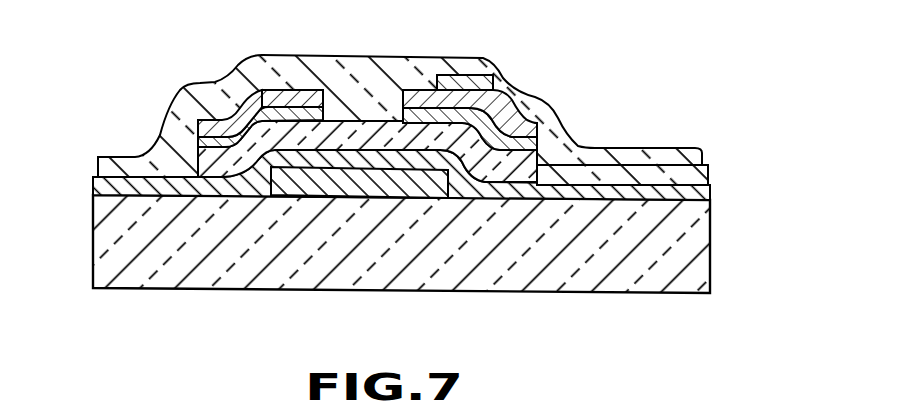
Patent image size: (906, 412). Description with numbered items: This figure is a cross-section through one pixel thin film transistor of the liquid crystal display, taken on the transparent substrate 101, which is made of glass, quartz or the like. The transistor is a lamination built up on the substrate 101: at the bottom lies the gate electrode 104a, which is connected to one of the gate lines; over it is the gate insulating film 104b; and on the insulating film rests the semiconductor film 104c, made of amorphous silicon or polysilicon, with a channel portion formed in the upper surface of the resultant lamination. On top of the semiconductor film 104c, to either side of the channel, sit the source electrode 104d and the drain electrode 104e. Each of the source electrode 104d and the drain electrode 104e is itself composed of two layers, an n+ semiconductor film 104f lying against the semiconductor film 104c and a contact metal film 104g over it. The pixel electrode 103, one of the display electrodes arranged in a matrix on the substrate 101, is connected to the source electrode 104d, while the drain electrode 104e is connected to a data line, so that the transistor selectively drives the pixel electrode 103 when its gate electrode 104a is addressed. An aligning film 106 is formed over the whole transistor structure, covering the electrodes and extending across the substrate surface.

The transparent substrate 101 is at (705, 260).
The pixel electrode 103 is at (708, 173).
The gate electrode 104a is at (313, 189).
The gate insulating film 104b is at (705, 198).
The semiconductor film 104c is at (520, 170).
The source electrode 104d is at (493, 72).
The drain electrode 104e is at (292, 82).
The n+ semiconductor film 104f is at (200, 144).
The contact metal film 104g is at (237, 113).
The aligning film 106 is at (407, 70).